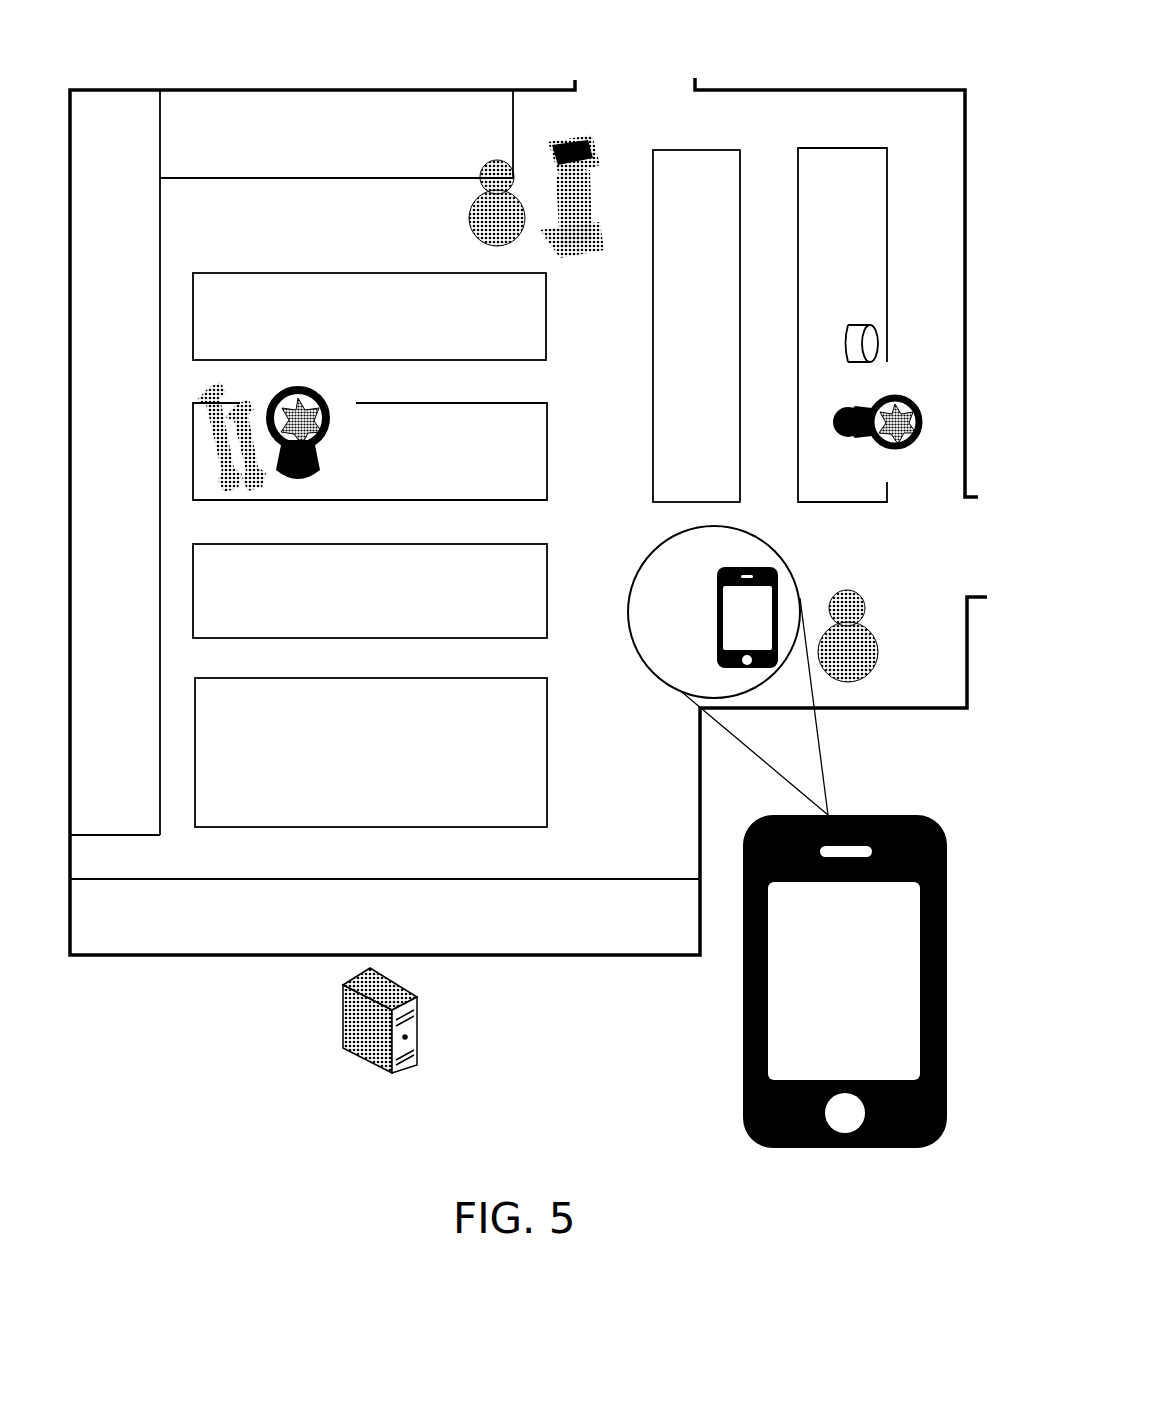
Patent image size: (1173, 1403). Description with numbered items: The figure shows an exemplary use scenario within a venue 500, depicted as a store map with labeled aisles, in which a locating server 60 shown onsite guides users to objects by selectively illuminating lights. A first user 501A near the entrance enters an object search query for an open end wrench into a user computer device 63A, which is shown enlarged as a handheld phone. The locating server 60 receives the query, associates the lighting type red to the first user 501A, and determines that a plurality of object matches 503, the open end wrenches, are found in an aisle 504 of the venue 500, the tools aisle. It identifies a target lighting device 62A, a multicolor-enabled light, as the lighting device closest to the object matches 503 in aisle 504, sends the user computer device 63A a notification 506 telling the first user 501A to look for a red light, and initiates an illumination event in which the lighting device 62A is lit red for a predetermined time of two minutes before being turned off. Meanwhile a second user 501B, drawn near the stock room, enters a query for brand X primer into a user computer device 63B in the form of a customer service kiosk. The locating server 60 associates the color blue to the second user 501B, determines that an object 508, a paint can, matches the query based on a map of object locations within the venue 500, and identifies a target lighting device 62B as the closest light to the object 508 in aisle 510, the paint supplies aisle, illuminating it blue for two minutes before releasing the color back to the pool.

The venue 500 is at (778, 62).
The first user 501A is at (885, 635).
The second user 501B is at (461, 200).
The object matches 503 is at (183, 410).
The aisle 504 is at (552, 465).
The notification 506 is at (796, 994).
The object 508 is at (868, 313).
The aisle 510 is at (847, 147).
The locating server 60 is at (415, 1020).
The lighting device 62A is at (297, 384).
The lighting device 62B is at (903, 397).
The user computer device 63A is at (715, 612).
The user computer device 63B is at (577, 202).